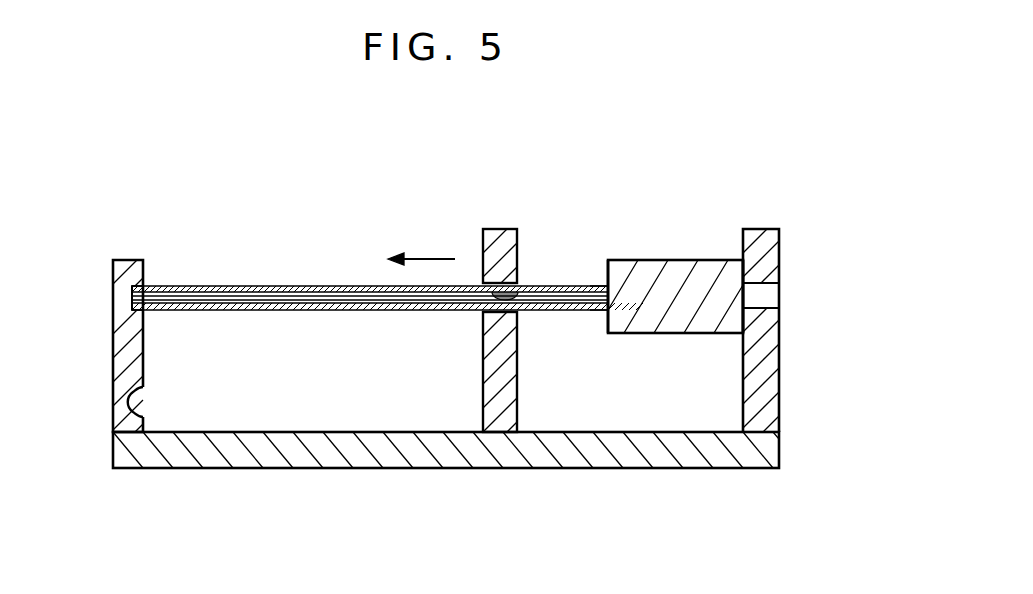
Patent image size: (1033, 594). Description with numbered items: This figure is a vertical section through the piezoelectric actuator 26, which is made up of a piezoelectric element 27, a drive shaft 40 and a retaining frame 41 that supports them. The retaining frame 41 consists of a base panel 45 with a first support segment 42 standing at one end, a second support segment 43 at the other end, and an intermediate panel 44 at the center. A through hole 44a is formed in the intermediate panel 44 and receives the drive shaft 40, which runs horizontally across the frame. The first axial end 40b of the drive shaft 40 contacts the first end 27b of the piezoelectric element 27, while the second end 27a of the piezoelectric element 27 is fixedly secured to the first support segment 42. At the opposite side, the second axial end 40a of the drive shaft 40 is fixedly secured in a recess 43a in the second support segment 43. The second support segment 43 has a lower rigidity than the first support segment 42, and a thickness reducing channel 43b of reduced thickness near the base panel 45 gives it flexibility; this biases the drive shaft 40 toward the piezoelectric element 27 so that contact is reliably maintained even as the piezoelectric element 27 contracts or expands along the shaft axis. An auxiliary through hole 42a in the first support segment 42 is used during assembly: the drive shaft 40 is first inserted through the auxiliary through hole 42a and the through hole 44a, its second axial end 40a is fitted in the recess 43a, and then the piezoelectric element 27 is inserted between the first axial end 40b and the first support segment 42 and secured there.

The piezoelectric actuator 26 is at (194, 168).
The piezoelectric element 27 is at (679, 260).
The second end of the piezoelectric element 27a is at (733, 260).
The first end of the piezoelectric element 27b is at (620, 260).
The drive shaft 40 is at (315, 286).
The second axial end of the drive shaft 40a is at (160, 311).
The first axial end of the drive shaft 40b is at (590, 313).
The retaining frame 41 is at (608, 492).
The first support segment 42 is at (750, 378).
The auxiliary through hole 42a is at (760, 284).
The second support segment 43 is at (125, 338).
The recess 43a is at (136, 297).
The thickness reducing channel 43b is at (118, 398).
The intermediate panel 44 is at (497, 375).
The through hole 44a is at (533, 285).
The base panel 45 is at (432, 453).